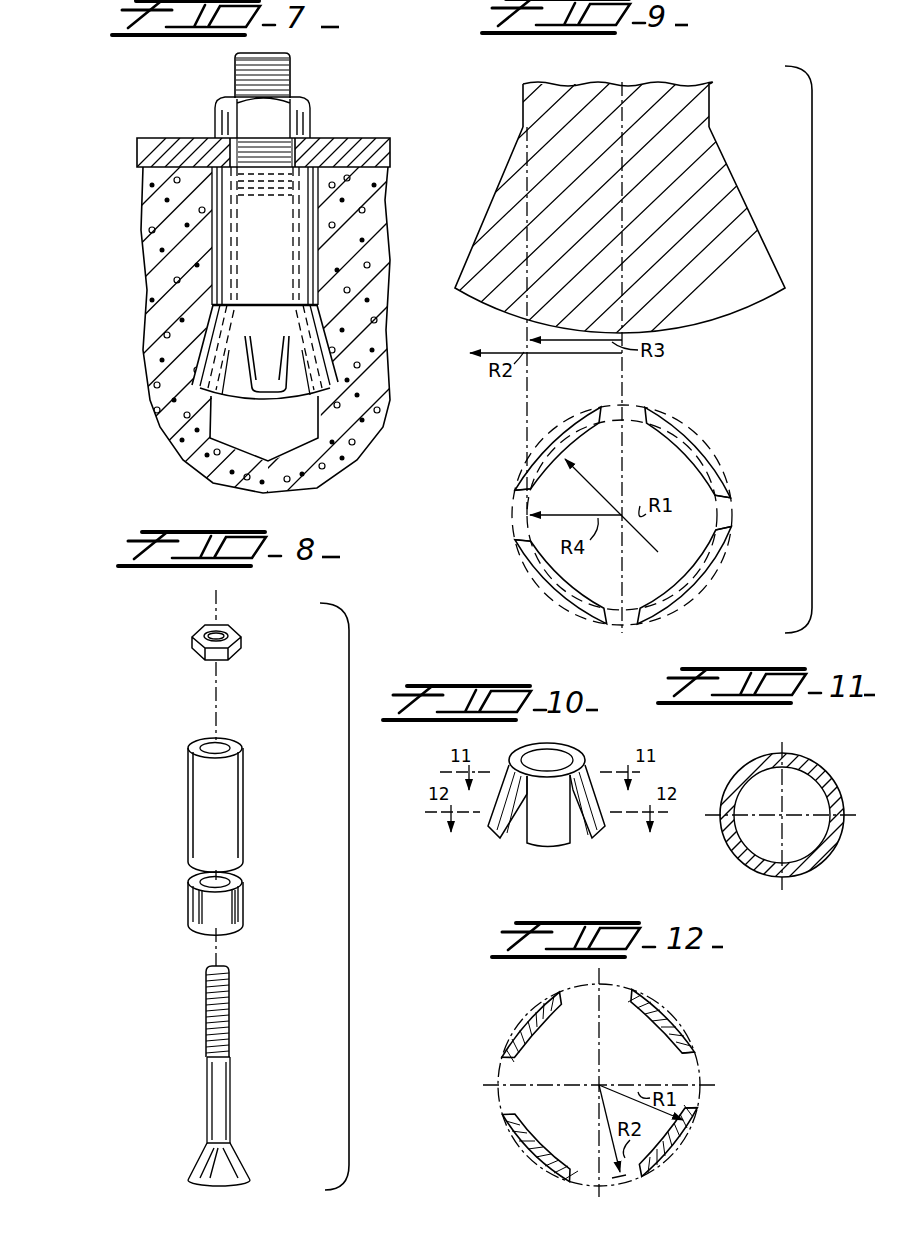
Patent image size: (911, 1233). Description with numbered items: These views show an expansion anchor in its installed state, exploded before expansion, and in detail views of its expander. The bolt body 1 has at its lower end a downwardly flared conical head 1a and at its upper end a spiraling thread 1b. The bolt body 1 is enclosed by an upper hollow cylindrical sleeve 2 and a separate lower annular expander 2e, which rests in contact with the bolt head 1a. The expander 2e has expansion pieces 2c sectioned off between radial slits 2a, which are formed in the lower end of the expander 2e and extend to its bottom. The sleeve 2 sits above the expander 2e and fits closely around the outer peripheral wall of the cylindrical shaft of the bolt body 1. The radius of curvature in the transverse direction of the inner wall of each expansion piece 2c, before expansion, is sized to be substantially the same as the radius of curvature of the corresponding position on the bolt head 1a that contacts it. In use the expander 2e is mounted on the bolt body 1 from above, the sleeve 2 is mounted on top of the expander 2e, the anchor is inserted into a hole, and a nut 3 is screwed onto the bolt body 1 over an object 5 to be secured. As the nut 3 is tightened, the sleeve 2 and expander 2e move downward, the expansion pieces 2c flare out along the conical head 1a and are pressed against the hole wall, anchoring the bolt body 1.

In FIG. 7, the bolt body 1 is at (292, 70).
In FIG. 9, the bolt body 1 is at (520, 97).
In FIG. 8, the bolt body 1 is at (190, 1018).
In FIG. 7, the conical head 1a is at (287, 397).
In FIG. 9, the conical head 1a is at (508, 172).
In FIG. 8, the conical head 1a is at (212, 1168).
In FIG. 7, the spiraling thread 1b is at (238, 70).
In FIG. 8, the spiraling thread 1b is at (231, 1022).
In FIG. 7, the sleeve 2 is at (320, 232).
In FIG. 8, the sleeve 2 is at (186, 790).
In FIG. 7, the radial slits 2a is at (240, 372).
In FIG. 9, the radial slits 2a is at (620, 515).
In FIG. 8, the radial slits 2a is at (200, 926).
In FIG. 10, the radial slits 2a is at (556, 809).
In FIG. 12, the radial slits 2a is at (632, 1086).
In FIG. 7, the expansion pieces 2c is at (262, 392).
In FIG. 9, the expansion pieces 2c is at (514, 540).
In FIG. 8, the expansion pieces 2c is at (212, 928).
In FIG. 10, the expansion pieces 2c is at (562, 838).
In FIG. 12, the expansion pieces 2c is at (700, 1126).
In FIG. 7, the annular expander 2e is at (200, 350).
In FIG. 9, the annular expander 2e is at (732, 513).
In FIG. 8, the annular expander 2e is at (244, 898).
In FIG. 10, the annular expander 2e is at (578, 778).
In FIG. 11, the annular expander 2e is at (810, 870).
In FIG. 12, the annular expander 2e is at (600, 1086).
In FIG. 7, the nut 3 is at (310, 122).
In FIG. 8, the nut 3 is at (234, 634).
In FIG. 7, the object 5 is at (372, 154).